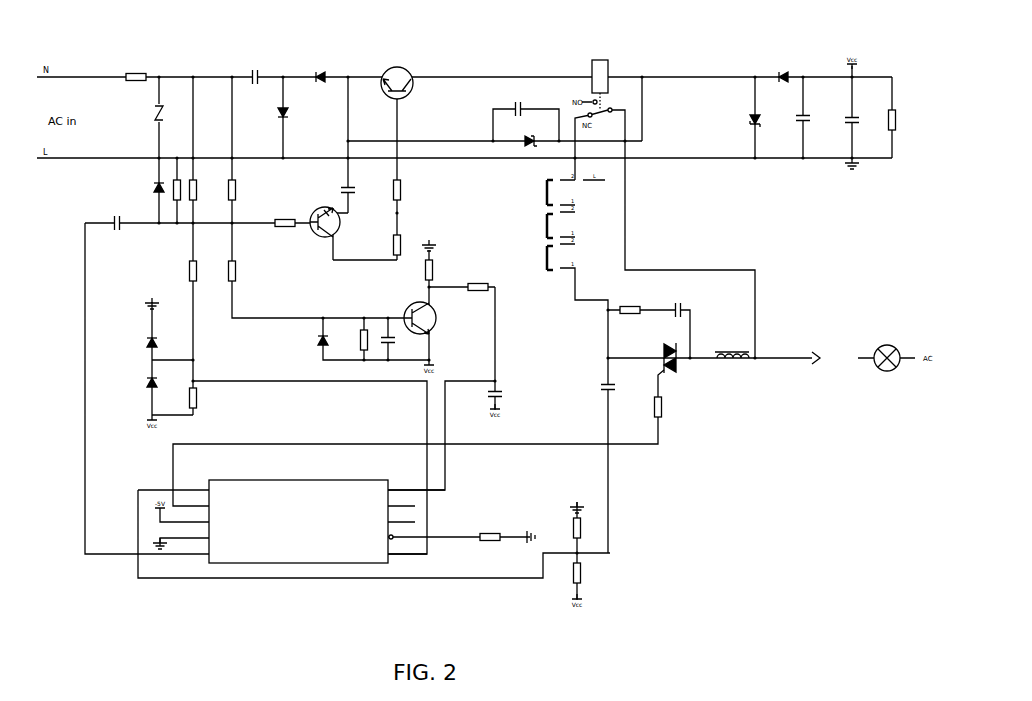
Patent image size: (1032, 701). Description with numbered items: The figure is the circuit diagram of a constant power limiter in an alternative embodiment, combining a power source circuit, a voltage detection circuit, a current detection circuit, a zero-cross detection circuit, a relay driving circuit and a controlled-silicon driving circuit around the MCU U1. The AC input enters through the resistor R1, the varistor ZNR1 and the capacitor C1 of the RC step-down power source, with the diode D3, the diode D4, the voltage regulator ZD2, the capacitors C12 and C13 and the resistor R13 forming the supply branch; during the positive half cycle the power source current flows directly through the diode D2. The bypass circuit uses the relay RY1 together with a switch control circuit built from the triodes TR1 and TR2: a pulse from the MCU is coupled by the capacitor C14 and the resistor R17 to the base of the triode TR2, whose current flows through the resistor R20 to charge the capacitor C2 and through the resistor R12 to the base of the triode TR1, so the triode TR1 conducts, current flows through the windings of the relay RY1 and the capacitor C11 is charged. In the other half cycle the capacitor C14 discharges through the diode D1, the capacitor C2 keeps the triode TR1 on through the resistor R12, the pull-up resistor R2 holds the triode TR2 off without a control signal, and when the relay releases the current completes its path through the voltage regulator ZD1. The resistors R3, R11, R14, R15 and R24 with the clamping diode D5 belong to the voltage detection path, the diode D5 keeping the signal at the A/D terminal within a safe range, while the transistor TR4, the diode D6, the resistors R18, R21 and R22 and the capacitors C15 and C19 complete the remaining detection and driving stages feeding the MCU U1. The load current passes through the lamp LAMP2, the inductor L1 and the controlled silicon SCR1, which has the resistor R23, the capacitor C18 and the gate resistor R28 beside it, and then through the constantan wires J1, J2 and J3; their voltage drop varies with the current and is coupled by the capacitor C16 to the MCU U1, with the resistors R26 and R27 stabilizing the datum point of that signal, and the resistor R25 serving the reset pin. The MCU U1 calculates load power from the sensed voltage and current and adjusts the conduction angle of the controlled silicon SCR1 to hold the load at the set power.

The resistor R1 is at (136, 71).
The varistor ZNR1 is at (173, 113).
The capacitor C1 is at (255, 71).
The diode D2 is at (291, 113).
The diode D3 is at (320, 70).
The triode TR1 is at (397, 75).
The capacitor C2 is at (354, 192).
The resistor R12 is at (407, 190).
The resistor R20 is at (407, 245).
The triode TR2 is at (335, 222).
The resistor R17 is at (285, 217).
The capacitor C14 is at (117, 217).
The diode D1 is at (151, 187).
The pull-up resistor R2 is at (183, 190).
The resistor R3 is at (199, 190).
The resistor R11 is at (242, 190).
The resistor R14 is at (203, 271).
The resistor R15 is at (242, 271).
The clamping diode D5 is at (144, 362).
The resistor R24 is at (203, 398).
The diode D6 is at (315, 340).
The resistor R18 is at (353, 339).
The capacitor C15 is at (398, 340).
The transistor TR4 is at (430, 317).
The resistor R21 is at (440, 270).
The resistor R22 is at (478, 281).
The capacitor C19 is at (505, 394).
The relay RY1 is at (600, 69).
The capacitor C11 is at (511, 105).
The voltage regulator ZD1 is at (525, 137).
The constantan wire J1 is at (543, 192).
The constantan wire J2 is at (543, 226).
The constantan wire J3 is at (543, 258).
The resistor R23 is at (630, 304).
The capacitor C18 is at (678, 305).
The controlled silicon SCR1 is at (670, 350).
The resistor R28 is at (668, 407).
The capacitor C16 is at (618, 387).
The inductor L1 is at (732, 350).
The lamp LAMP2 is at (886, 351).
The diode D4 is at (783, 70).
The zener diode ZD2 is at (766, 121).
The capacitor C12 is at (813, 119).
The capacitor C13 is at (862, 120).
The resistor R13 is at (902, 120).
The MCU U1 is at (314, 514).
The resistor R25 is at (490, 530).
The resistor R26 is at (587, 528).
The resistor R27 is at (587, 573).